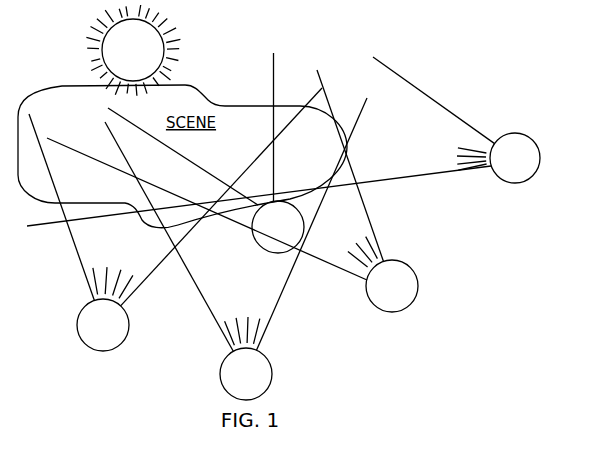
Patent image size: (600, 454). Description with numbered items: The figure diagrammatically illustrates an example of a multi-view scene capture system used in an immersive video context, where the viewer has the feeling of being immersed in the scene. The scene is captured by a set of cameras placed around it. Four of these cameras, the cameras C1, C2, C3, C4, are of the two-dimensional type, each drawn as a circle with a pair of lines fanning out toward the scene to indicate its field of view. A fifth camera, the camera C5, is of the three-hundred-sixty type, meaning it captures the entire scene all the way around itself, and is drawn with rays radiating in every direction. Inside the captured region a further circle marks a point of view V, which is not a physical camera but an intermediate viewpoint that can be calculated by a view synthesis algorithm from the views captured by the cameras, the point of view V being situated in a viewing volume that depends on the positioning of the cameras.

The camera C1 is at (175, 219).
The camera C2 is at (236, 249).
The camera C3 is at (232, 191).
The camera C4 is at (283, 141).
The camera C5 is at (133, 50).
The point of view V is at (278, 227).